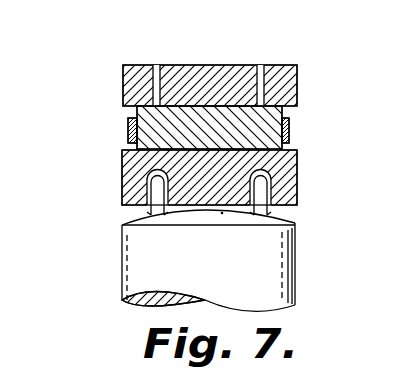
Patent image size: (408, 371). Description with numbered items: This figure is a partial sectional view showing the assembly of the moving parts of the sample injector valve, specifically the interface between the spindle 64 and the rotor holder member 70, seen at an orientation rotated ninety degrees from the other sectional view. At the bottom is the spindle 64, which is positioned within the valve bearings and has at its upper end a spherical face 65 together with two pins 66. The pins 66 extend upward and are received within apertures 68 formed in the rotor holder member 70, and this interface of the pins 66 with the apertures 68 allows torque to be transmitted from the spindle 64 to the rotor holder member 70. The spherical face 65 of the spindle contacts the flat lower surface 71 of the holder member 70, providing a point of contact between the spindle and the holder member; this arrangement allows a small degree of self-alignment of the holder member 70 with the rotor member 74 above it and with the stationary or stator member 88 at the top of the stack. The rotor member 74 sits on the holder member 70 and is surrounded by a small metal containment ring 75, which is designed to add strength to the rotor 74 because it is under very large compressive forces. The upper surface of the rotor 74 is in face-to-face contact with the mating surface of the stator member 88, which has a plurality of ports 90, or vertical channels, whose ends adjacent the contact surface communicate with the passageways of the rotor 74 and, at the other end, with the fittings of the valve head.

The spindle 64 is at (112, 267).
The spherical face 65 is at (222, 215).
The pins 66 is at (149, 214).
The apertures 68 is at (149, 188).
The rotor holder member 70 is at (297, 162).
The flat lower surface 71 is at (200, 211).
The rotor member 74 is at (283, 111).
The metal containment ring 75 is at (128, 130).
The stator member 88 is at (122, 72).
The ports 90 is at (157, 65).